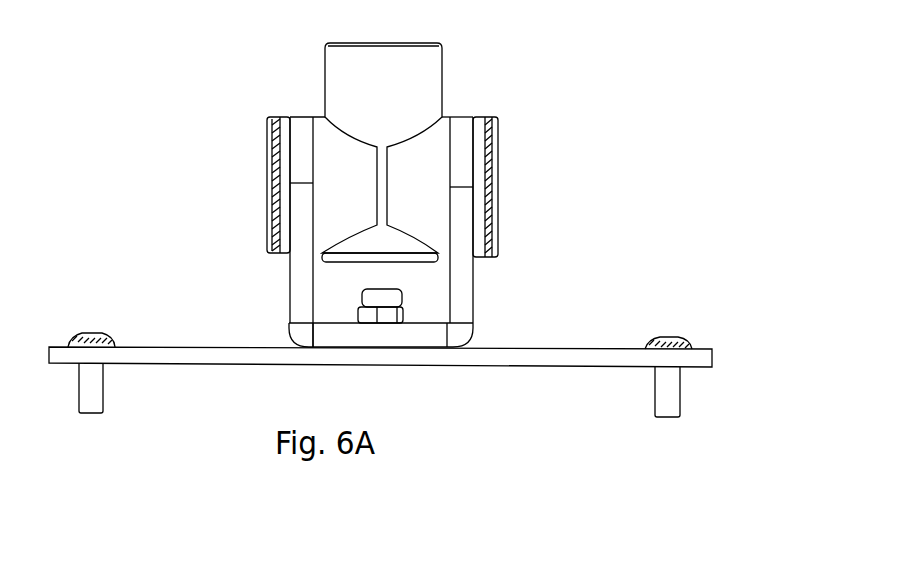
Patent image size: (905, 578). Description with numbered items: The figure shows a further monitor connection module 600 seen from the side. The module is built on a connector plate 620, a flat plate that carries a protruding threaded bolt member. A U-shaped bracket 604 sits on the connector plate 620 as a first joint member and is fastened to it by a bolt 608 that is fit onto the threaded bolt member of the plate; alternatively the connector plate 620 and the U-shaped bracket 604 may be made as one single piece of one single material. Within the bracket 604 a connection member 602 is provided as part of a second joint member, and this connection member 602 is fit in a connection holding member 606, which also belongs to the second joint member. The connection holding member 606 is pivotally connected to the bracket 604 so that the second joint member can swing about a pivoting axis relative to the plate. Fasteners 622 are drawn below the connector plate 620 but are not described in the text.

The monitor connection module 600 is at (702, 90).
The connection member 602 is at (367, 57).
The U-shaped bracket 604 is at (473, 322).
The connection holding member 606 is at (348, 172).
The bolt 608 is at (360, 309).
The connector plate 620 is at (577, 352).
The fastener screw 622 is at (677, 370).